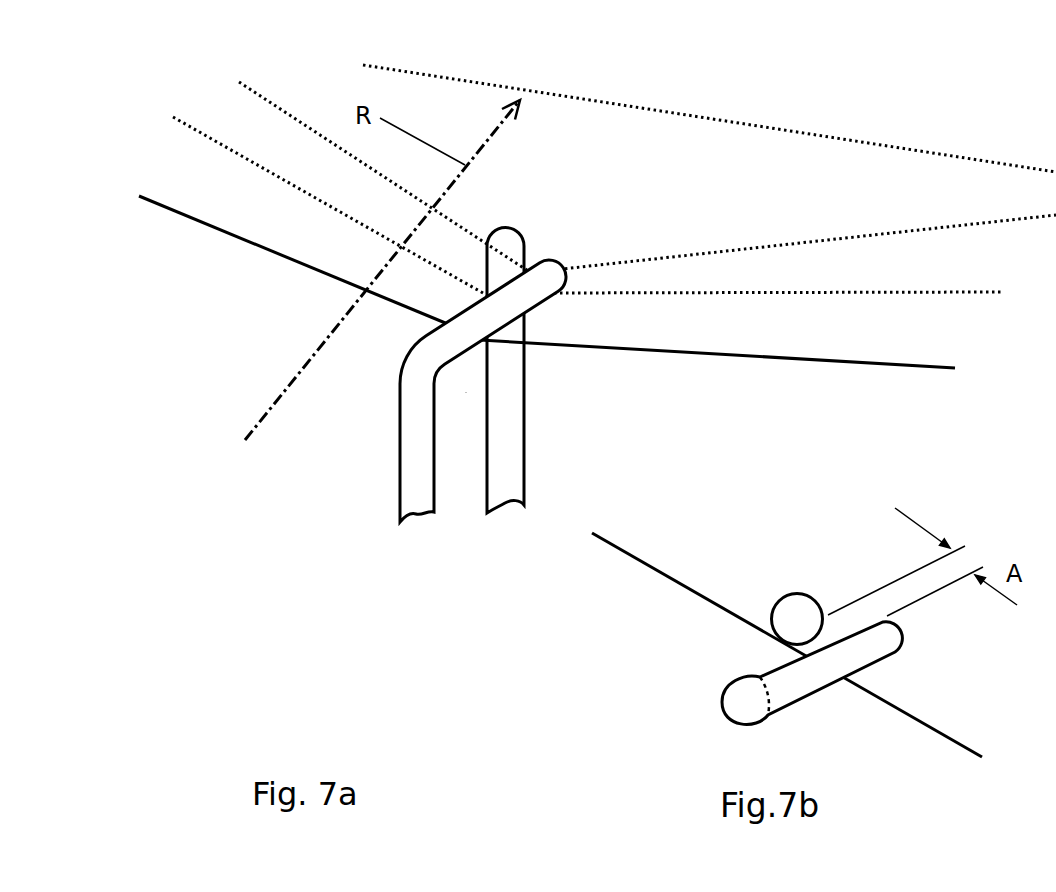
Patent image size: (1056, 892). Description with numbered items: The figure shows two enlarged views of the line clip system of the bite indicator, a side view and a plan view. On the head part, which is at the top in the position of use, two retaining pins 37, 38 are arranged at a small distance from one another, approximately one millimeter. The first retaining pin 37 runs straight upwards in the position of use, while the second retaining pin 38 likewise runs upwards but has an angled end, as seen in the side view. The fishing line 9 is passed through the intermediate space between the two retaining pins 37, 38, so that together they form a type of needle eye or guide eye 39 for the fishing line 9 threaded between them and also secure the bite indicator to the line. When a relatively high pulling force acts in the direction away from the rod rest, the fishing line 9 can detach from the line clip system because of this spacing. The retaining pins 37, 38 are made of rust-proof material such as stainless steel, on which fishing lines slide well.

In FIG. 7A, the fishing line 9 is at (210, 228).
In FIG. 7B, the fishing line 9 is at (668, 575).
In FIG. 7A, the first retaining pin 37 is at (510, 437).
In FIG. 7B, the first retaining pin 37 is at (797, 593).
In FIG. 7A, the second retaining pin 38 is at (407, 465).
In FIG. 7B, the second retaining pin 38 is at (762, 677).
In FIG. 7A, the guide eye 39 is at (466, 392).